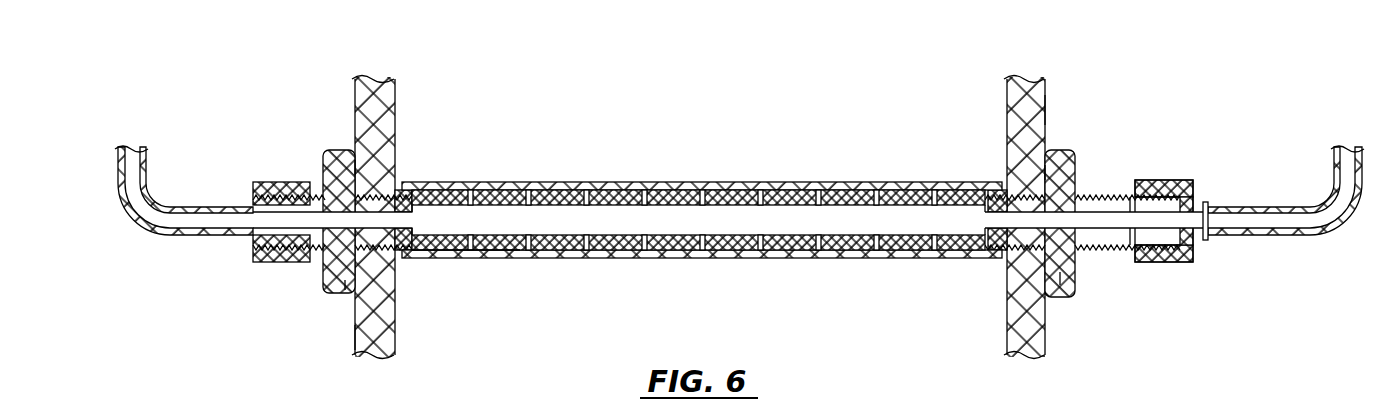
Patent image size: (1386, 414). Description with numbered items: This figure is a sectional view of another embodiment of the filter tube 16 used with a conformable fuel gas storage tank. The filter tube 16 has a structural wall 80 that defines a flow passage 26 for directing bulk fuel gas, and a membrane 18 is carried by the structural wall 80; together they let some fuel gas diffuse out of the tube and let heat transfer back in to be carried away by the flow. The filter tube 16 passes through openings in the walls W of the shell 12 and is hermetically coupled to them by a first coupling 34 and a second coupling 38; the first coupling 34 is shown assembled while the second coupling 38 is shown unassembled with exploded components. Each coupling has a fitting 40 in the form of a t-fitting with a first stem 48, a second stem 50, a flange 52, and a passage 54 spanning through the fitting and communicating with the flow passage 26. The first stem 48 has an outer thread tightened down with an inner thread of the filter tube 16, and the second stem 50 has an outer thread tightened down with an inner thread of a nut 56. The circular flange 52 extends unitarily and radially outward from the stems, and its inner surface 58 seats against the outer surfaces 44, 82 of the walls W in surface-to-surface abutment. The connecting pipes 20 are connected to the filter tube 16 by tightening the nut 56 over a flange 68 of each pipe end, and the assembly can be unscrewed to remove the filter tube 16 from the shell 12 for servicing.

The shell 12 is at (1058, 80).
The filter tube 16 is at (598, 256).
The membrane 18 is at (843, 185).
The connecting pipe 20 is at (144, 230).
The flow passage 26 is at (707, 225).
The first coupling 34 is at (324, 160).
The second coupling 38 is at (1197, 152).
The fitting 40 is at (327, 268).
The outer surface of wall 44 is at (357, 338).
The first stem 48 is at (383, 196).
The second stem 50 is at (299, 205).
The flange 52 is at (346, 288).
The passage 54 is at (293, 225).
The nut 56 is at (255, 250).
The inner surface of flange 58 is at (362, 164).
The flange of pipe end 68 is at (1204, 241).
The structural wall 80 is at (500, 252).
The outer surface of wall 82 is at (1047, 108).
The wall W is at (372, 128).